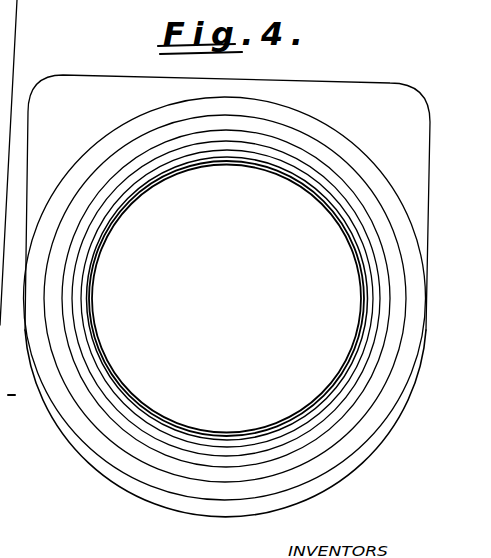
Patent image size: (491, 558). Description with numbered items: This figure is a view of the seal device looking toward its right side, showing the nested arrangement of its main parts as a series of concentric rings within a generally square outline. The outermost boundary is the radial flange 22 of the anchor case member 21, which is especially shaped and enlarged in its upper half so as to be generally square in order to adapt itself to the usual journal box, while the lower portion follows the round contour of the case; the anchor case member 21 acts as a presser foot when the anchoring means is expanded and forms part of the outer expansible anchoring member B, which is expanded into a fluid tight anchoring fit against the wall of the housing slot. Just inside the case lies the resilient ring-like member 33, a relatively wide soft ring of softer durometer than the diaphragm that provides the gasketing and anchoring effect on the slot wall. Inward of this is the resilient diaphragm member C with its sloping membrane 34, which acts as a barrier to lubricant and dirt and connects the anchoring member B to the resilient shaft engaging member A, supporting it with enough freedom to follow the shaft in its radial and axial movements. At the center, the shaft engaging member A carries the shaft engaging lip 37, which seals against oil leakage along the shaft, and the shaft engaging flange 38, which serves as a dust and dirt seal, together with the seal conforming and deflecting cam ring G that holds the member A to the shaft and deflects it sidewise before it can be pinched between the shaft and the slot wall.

The anchor case member 21 is at (150, 500).
The radial flange 22 is at (353, 88).
The resilient ring-like member 33 is at (79, 171).
The sloping membrane 34 is at (146, 148).
The shaft engaging lip 37 is at (107, 234).
The shaft engaging flange 38 is at (115, 387).
The resilient shaft engaging member A is at (352, 210).
The outer expansible anchoring member B is at (277, 508).
The resilient diaphragm member C is at (73, 348).
The seal conforming and deflecting cam ring G is at (138, 173).